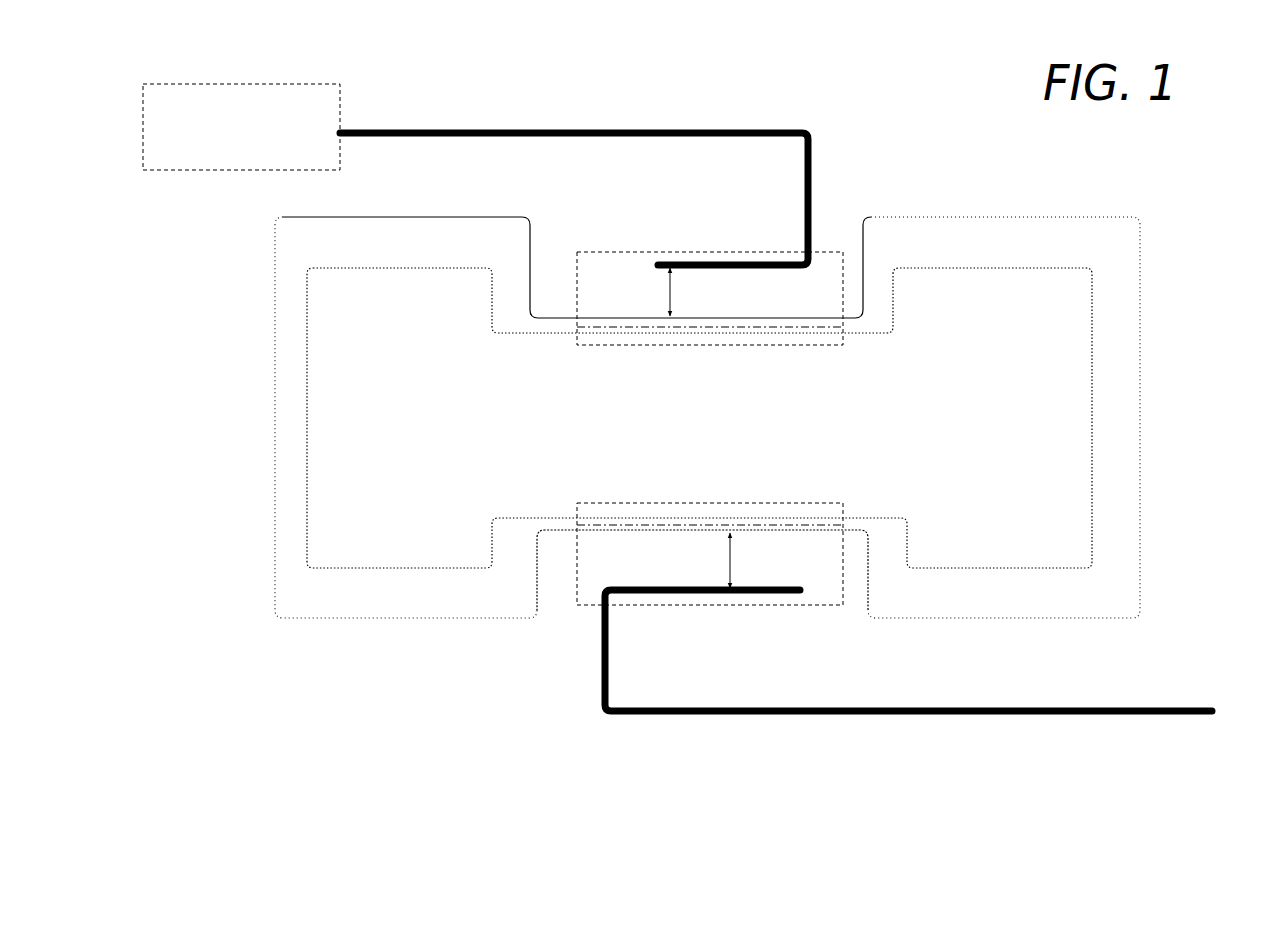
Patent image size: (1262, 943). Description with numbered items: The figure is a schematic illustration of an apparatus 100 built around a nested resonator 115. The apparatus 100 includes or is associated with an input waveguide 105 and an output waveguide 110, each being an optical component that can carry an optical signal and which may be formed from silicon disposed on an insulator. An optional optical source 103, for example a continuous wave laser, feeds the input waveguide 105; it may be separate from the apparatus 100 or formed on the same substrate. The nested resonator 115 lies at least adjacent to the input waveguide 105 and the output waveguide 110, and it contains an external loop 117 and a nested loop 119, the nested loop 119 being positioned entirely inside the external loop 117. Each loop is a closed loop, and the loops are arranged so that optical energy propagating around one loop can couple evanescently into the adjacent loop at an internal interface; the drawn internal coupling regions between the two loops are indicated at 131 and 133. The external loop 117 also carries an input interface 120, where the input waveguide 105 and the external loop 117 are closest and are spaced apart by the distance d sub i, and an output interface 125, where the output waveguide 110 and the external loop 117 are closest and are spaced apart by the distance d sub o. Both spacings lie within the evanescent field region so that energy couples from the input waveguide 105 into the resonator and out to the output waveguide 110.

The apparatus 100 is at (306, 720).
The optical source 103 is at (241, 127).
The input waveguide 105 is at (520, 106).
The output waveguide 110 is at (1011, 722).
The nested resonator 115 is at (277, 198).
The external loop 117 is at (308, 618).
The nested loop 119 is at (360, 568).
The input interface 120 is at (607, 250).
The output interface 125 is at (810, 603).
The inner coupling gap line 131 is at (790, 345).
The outer coupling gap line 133 is at (643, 502).